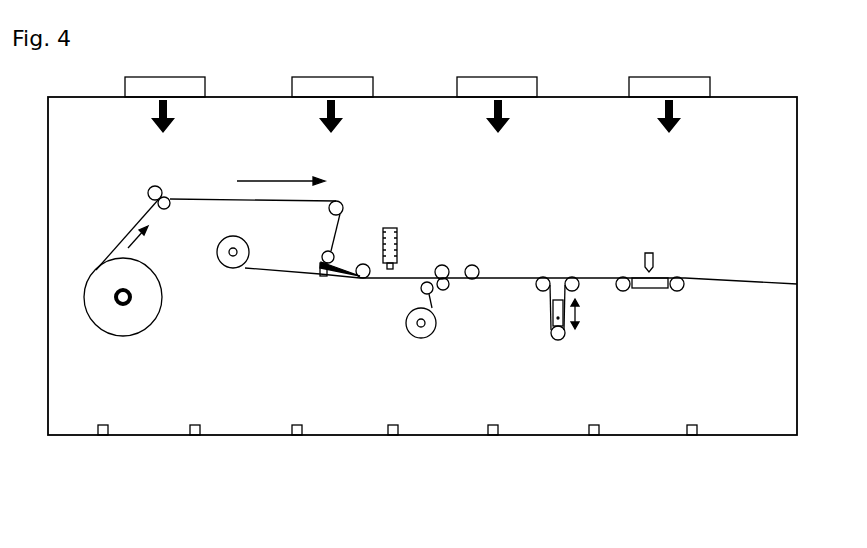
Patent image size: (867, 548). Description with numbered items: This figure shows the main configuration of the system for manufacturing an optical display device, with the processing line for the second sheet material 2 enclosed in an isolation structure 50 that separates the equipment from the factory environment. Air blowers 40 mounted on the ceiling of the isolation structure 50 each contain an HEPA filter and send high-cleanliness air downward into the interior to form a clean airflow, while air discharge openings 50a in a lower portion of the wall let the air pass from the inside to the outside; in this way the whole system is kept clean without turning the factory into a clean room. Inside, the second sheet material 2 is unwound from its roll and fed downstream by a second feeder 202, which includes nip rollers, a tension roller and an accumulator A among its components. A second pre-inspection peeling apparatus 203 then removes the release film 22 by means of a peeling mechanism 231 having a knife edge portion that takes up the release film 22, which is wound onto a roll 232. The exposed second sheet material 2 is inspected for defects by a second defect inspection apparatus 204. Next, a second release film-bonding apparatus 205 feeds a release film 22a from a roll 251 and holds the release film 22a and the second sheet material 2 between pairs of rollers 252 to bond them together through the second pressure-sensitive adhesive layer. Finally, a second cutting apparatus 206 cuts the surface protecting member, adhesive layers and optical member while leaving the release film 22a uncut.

The air blower 40 is at (667, 77).
The isolation structure 50 is at (638, 435).
The air discharge opening 50a is at (493, 437).
The second sheet material 2 is at (125, 238).
The second feeder 202 is at (164, 188).
The release film 22 is at (288, 271).
The roll 232 is at (227, 272).
The second pre-inspection peeling apparatus 203 is at (271, 302).
The peeling mechanism 231 is at (332, 277).
The second defect inspection apparatus 204 is at (390, 227).
The pair of rollers 252 is at (442, 262).
The release film 22a is at (422, 294).
The roll 251 is at (411, 338).
The second release film-bonding apparatus 205 is at (448, 345).
The accumulator A is at (560, 350).
The second cutting apparatus 206 is at (650, 252).